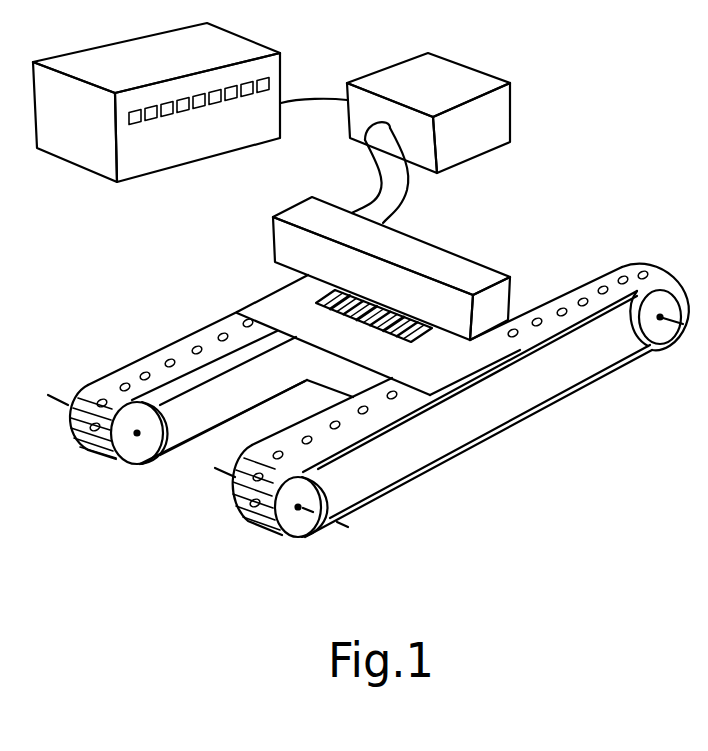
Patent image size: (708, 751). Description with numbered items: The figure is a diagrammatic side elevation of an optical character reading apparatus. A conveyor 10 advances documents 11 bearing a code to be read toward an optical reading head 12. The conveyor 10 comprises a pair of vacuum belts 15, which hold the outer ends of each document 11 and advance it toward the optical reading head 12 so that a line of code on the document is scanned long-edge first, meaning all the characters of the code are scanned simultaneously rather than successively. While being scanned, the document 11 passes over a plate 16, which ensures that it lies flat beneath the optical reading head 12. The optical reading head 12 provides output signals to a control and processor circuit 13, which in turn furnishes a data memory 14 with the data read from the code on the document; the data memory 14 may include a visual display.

The conveyor 10 is at (212, 448).
The document 11 is at (455, 368).
The optical reading head 12 is at (503, 295).
The control and processor circuit 13 is at (497, 117).
The data memory 14 is at (190, 148).
The vacuum belts 15 is at (157, 358).
The plate 16 is at (270, 349).